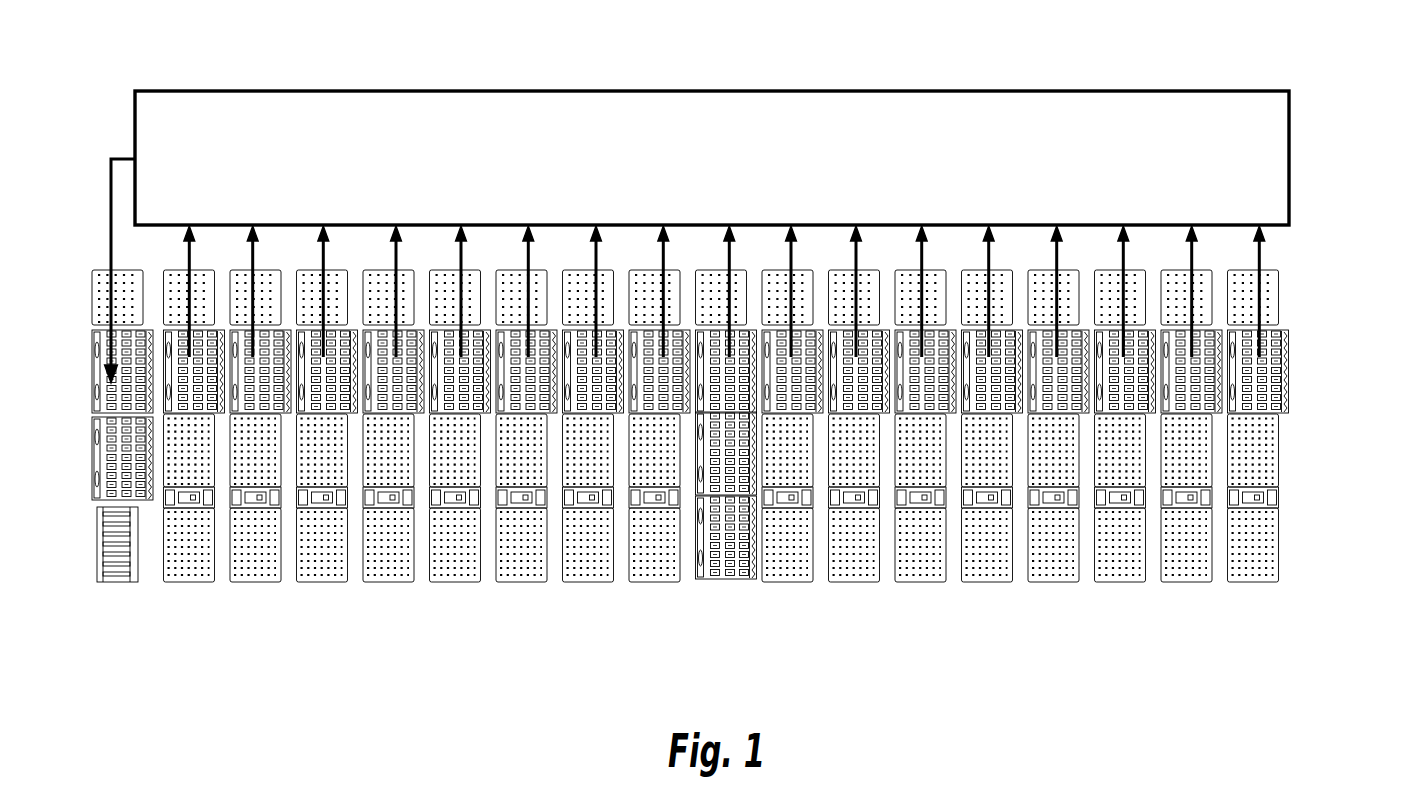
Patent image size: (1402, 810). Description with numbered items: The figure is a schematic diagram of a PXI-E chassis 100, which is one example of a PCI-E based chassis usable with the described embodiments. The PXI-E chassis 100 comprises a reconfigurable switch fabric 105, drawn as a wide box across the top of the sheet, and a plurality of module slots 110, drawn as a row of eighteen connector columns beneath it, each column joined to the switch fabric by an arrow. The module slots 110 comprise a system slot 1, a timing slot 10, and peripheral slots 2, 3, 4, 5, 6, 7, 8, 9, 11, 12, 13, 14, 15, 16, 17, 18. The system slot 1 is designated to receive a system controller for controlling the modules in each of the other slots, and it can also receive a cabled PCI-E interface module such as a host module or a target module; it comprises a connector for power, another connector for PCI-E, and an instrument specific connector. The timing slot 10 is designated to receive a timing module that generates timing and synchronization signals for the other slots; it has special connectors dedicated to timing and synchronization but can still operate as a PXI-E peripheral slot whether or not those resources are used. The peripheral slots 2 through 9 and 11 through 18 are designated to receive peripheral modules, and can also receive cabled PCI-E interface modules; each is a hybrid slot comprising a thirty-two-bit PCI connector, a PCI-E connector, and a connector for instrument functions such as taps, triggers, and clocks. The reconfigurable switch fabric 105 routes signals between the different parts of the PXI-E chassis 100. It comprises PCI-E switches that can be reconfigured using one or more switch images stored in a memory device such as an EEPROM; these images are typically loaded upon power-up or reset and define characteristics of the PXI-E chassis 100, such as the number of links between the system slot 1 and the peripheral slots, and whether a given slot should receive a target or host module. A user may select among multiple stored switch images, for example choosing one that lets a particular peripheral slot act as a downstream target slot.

The PXI-E chassis 100 is at (763, 32).
The reconfigurable switch fabric 105 is at (1313, 91).
The module slots 110 is at (1305, 270).
The system slot 1 is at (122, 390).
The peripheral slot 2 is at (194, 423).
The peripheral slot 3 is at (260, 423).
The peripheral slot 4 is at (327, 423).
The peripheral slot 5 is at (393, 423).
The peripheral slot 6 is at (460, 423).
The peripheral slot 7 is at (526, 423).
The peripheral slot 8 is at (593, 423).
The peripheral slot 9 is at (659, 423).
The timing slot 10 is at (726, 423).
The peripheral slot 11 is at (792, 423).
The peripheral slot 12 is at (859, 423).
The peripheral slot 13 is at (925, 423).
The peripheral slot 14 is at (992, 423).
The peripheral slot 15 is at (1058, 423).
The peripheral slot 16 is at (1125, 423).
The peripheral slot 17 is at (1191, 423).
The peripheral slot 18 is at (1258, 423).